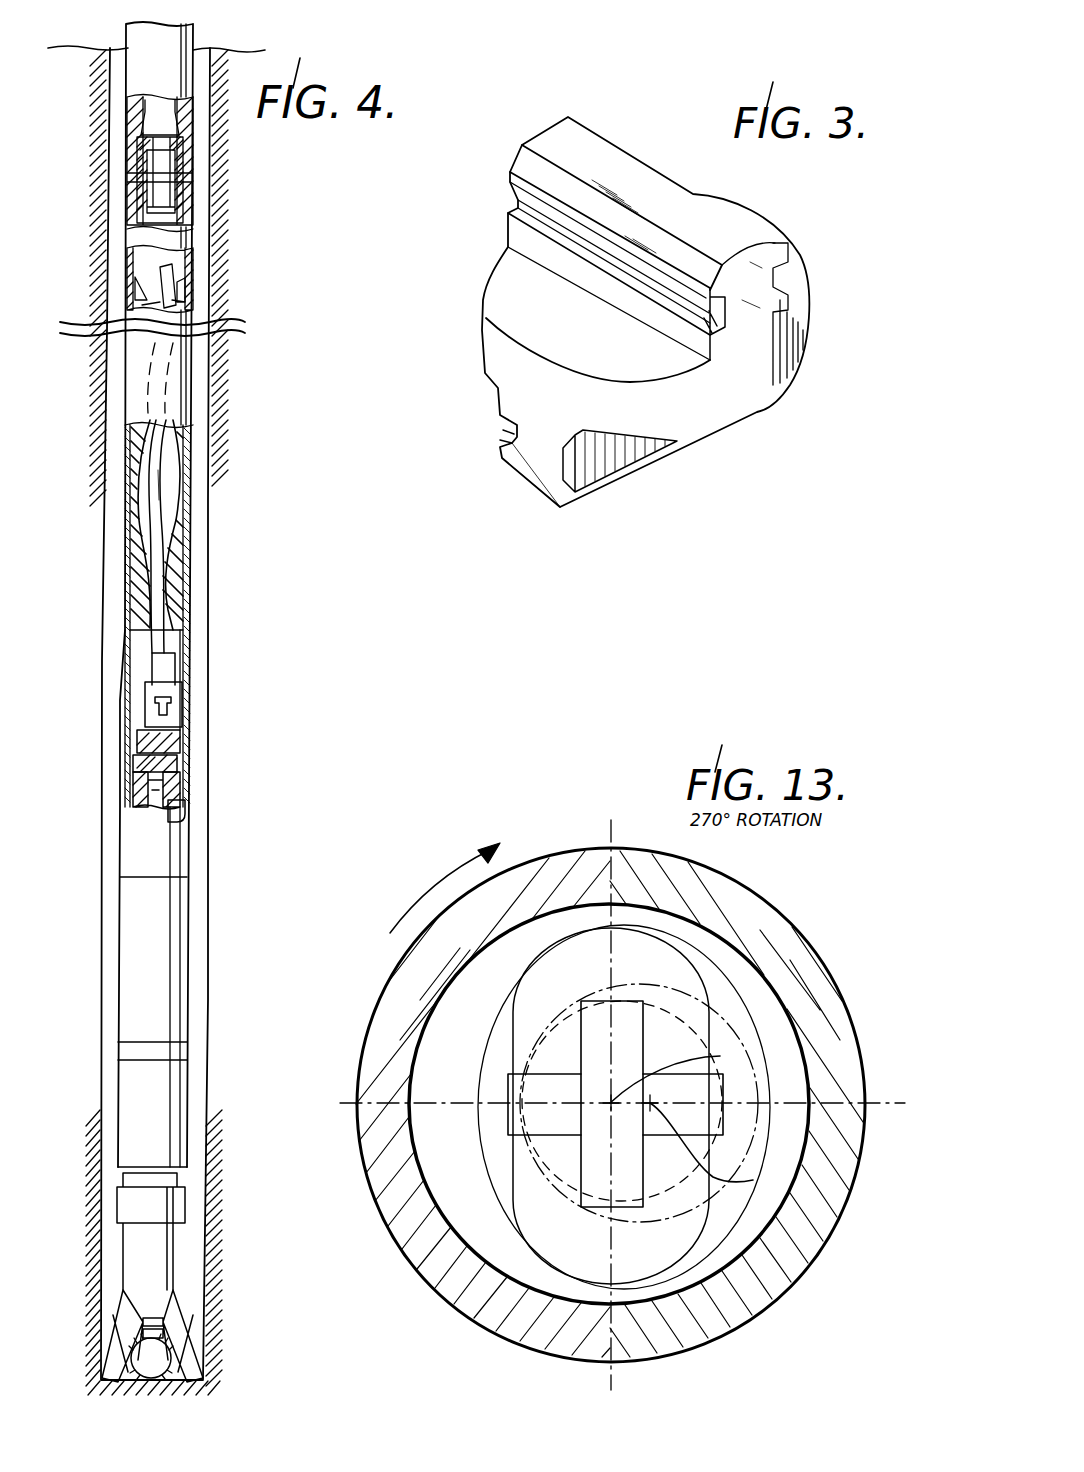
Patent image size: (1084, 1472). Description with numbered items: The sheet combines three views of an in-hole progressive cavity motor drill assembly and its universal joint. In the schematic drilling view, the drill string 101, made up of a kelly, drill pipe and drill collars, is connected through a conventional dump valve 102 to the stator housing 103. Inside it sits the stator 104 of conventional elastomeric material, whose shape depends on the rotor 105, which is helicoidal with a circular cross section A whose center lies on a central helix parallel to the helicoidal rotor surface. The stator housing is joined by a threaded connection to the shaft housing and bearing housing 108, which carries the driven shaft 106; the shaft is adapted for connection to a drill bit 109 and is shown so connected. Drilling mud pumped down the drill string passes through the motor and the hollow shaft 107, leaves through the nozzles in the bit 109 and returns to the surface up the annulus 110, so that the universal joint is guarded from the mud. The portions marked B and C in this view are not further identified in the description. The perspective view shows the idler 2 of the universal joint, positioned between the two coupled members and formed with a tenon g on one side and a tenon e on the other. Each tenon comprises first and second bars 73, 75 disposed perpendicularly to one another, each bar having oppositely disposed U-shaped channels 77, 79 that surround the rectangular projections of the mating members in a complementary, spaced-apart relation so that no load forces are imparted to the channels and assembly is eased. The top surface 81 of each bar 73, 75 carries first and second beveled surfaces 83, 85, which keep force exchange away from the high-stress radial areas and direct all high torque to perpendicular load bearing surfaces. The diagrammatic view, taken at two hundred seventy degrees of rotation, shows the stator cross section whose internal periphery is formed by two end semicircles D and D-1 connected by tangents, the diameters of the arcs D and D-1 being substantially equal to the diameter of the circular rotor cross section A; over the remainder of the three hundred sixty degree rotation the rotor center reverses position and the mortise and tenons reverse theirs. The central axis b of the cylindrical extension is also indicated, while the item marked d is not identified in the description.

In FIG. 4, the drill string 101 is at (128, 40).
In FIG. 4, the dump valve 102 is at (180, 196).
In FIG. 4, the stator housing 103 is at (188, 254).
In FIG. 4, the stator 104 is at (180, 433).
In FIG. 4, the rotor 105 is at (168, 490).
In FIG. 4, the annulus 110 is at (200, 506).
In FIG. 4, the circular cross section of the rotor A is at (162, 582).
In FIG. 13, the circular cross section of the rotor A is at (697, 1027).
In FIG. 4, the coupling / axis B is at (167, 665).
In FIG. 13, the coupling / axis B is at (763, 1143).
In FIG. 4, the cam follower / housing bore C is at (147, 792).
In FIG. 13, the cam follower / housing bore C is at (493, 1035).
In FIG. 4, the driven shaft 106 is at (183, 775).
In FIG. 4, the hollow shaft 107 is at (175, 817).
In FIG. 4, the shaft housing and bearing housing 108 is at (130, 957).
In FIG. 4, the drill bit 109 is at (140, 1277).
In FIG. 3, the idler 2 is at (807, 320).
In FIG. 3, the top surface 81 is at (590, 150).
In FIG. 3, the first beveled surface 83 is at (522, 162).
In FIG. 3, the second beveled surface 85 is at (787, 248).
In FIG. 3, the U-shaped channel 79 is at (711, 335).
In FIG. 3, the U-shaped channel 77 is at (773, 282).
In FIG. 3, the first bar 73 is at (747, 300).
In FIG. 3, the tenon g is at (757, 265).
In FIG. 3, the tenon e is at (530, 470).
In FIG. 13, the tenon e is at (508, 1090).
In FIG. 3, the second bar 75 is at (535, 443).
In FIG. 13, the end semicircle D is at (603, 927).
In FIG. 13, the end semicircle D-1 is at (597, 1283).
In FIG. 13, the key d is at (597, 1000).
In FIG. 13, the central axis of the cylindrical extension b is at (740, 1181).